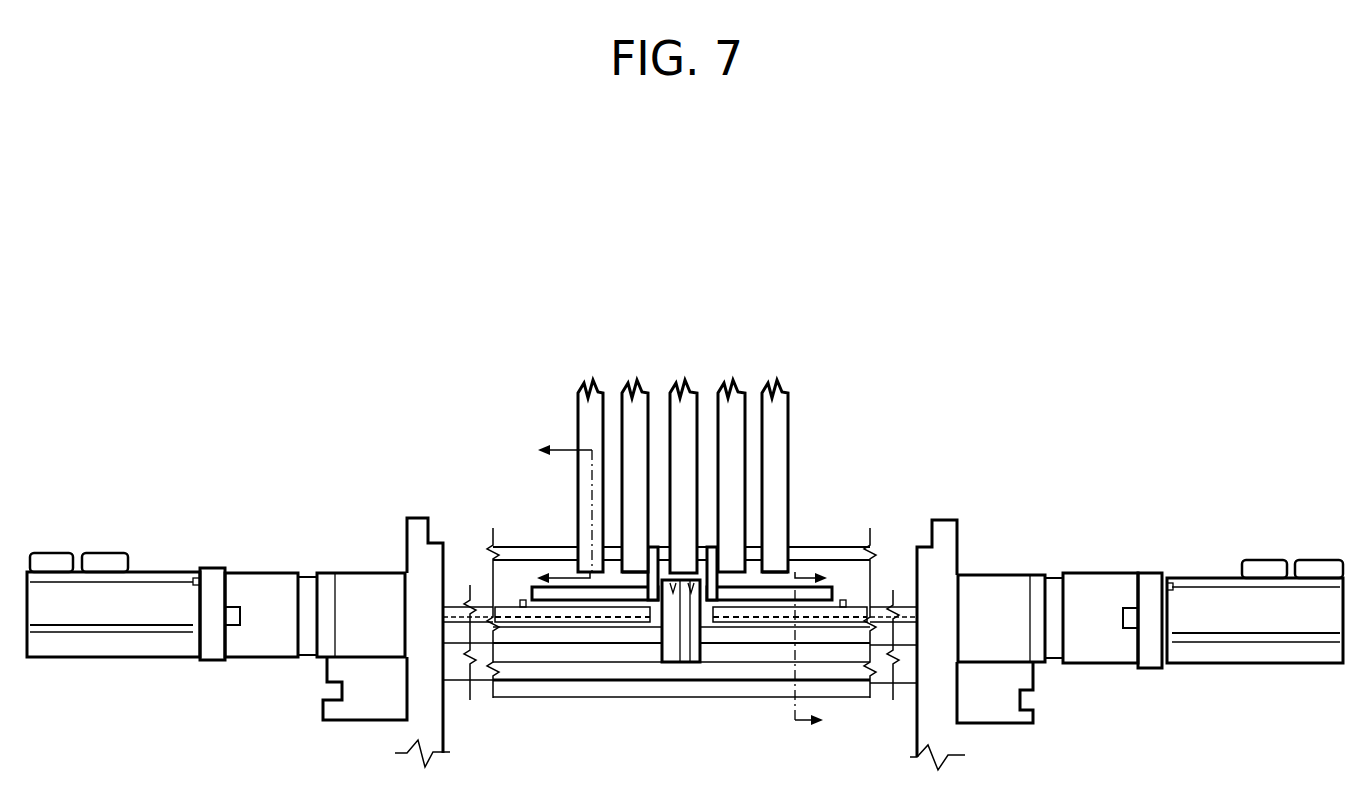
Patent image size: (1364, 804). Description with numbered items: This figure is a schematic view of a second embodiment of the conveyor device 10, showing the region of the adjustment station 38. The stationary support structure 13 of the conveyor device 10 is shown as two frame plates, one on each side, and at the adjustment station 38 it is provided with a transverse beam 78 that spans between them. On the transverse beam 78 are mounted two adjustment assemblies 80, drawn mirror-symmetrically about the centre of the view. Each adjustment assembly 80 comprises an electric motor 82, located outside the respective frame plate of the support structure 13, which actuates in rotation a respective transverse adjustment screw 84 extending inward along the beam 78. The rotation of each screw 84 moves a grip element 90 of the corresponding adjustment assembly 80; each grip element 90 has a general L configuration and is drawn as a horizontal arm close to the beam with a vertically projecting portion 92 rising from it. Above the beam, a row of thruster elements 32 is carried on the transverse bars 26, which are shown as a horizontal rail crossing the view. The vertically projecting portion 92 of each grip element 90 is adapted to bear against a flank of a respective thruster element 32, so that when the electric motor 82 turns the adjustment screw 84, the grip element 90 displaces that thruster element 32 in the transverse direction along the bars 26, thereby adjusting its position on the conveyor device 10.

The conveyor device 10 is at (1176, 248).
The stationary support structure 13 is at (957, 553).
The transverse bars 26 is at (807, 547).
The thruster element 32 is at (635, 418).
The adjustment station 38 is at (931, 390).
The transverse beam 78 is at (718, 633).
The adjustment assembly 80 is at (636, 566).
The electric motor 82 is at (196, 552).
The transverse adjustment screw 84 is at (510, 615).
The grip element 90 is at (593, 600).
The vertically projecting portion 92 is at (653, 585).